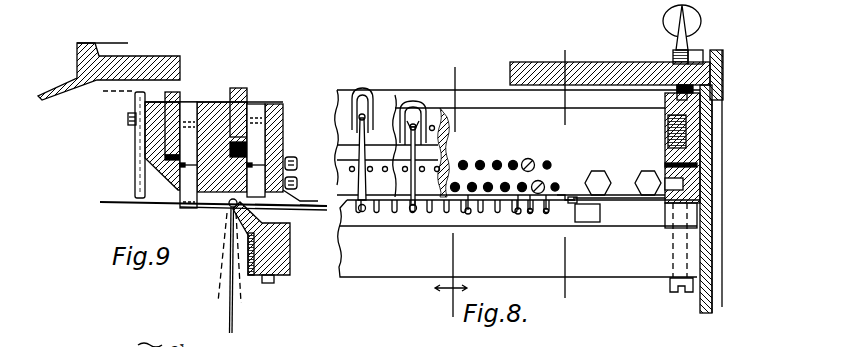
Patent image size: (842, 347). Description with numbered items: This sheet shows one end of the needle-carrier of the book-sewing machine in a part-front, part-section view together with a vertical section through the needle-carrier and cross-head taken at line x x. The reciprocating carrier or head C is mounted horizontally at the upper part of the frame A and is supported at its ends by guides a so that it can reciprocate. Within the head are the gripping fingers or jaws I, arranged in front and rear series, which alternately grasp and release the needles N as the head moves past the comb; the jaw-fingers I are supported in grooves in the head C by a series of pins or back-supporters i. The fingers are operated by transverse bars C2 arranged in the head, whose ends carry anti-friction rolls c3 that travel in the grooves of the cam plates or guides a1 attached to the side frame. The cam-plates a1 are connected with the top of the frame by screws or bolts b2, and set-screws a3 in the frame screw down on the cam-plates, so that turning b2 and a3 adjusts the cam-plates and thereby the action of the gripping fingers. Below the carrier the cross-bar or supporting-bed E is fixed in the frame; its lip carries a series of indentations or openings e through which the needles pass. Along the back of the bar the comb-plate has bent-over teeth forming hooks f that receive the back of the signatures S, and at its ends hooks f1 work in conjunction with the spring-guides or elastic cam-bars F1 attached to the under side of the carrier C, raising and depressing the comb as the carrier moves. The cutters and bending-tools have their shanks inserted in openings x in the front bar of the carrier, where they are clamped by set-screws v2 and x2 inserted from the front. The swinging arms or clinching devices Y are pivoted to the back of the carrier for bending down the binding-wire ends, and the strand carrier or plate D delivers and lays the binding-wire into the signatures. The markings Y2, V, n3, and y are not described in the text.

In FIG. 9, the frame A is at (109, 69).
In FIG. 8, the frame A is at (624, 181).
In FIG. 9, the guide bracket Y2 is at (103, 100).
In FIG. 9, the swinging arms or clinching devices Y is at (132, 145).
In FIG. 9, the reciprocating carrier or head C is at (214, 138).
In FIG. 8, the reciprocating carrier or head C is at (490, 152).
In FIG. 9, the transverse bars C2 is at (207, 115).
In FIG. 8, the transverse bars C2 is at (517, 143).
In FIG. 9, the anti-friction rolls c3 is at (270, 140).
In FIG. 8, the anti-friction rolls c3 is at (665, 125).
In FIG. 9, the gripping fingers or jaws I is at (222, 155).
In FIG. 8, the gripping fingers or jaws I is at (431, 156).
In FIG. 9, the pins or back-supporters i is at (222, 159).
In FIG. 8, the pins or back-supporters i is at (395, 152).
In FIG. 9, the set-screw x2 is at (297, 157).
In FIG. 8, the set-screw x2 is at (505, 158).
In FIG. 9, the set-screw v2 is at (297, 178).
In FIG. 8, the set-screw v2 is at (505, 182).
In FIG. 9, the bracket V is at (300, 194).
In FIG. 8, the bracket V is at (547, 215).
In FIG. 9, the needles N is at (213, 210).
In FIG. 8, the needles N is at (446, 209).
In FIG. 9, the bar end n3 is at (313, 212).
In FIG. 9, the hooks f is at (229, 198).
In FIG. 9, the cross-bar or supporting-bed E is at (268, 242).
In FIG. 8, the cross-bar or supporting-bed E is at (519, 246).
In FIG. 9, the signatures S is at (223, 258).
In FIG. 9, the strand carrier or plate D is at (238, 270).
In FIG. 8, the openings x is at (451, 189).
In FIG. 8, the section line y- y is at (562, 171).
In FIG. 8, the indentations or openings e is at (394, 214).
In FIG. 8, the hooks f1 is at (567, 206).
In FIG. 8, the spring-guides or elastic cam-bars F1 is at (619, 210).
In FIG. 8, the guides a is at (683, 185).
In FIG. 8, the cam plates or guides a1 is at (712, 110).
In FIG. 8, the set-screws a3 is at (665, 22).
In FIG. 8, the screws or bolts b2 is at (703, 50).